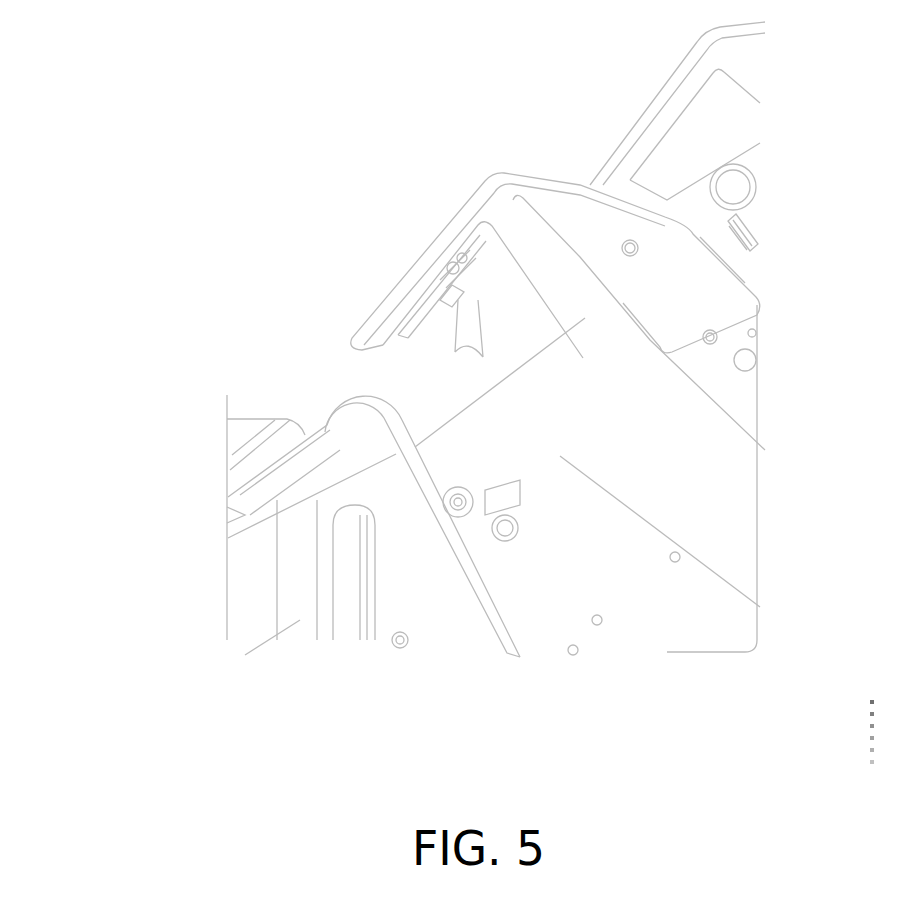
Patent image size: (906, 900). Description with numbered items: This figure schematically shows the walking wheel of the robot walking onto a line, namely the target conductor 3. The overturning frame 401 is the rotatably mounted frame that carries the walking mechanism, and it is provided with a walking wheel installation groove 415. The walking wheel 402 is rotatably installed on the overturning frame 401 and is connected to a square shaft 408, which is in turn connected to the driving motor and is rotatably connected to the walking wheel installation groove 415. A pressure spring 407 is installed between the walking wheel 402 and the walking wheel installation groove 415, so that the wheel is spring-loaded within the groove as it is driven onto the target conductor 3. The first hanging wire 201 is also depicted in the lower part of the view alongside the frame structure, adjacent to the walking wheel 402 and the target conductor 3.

The overturning frame 401 is at (480, 208).
The pressure spring 407 is at (455, 280).
The walking wheel installation groove 415 is at (490, 240).
The square shaft 408 is at (453, 297).
The walking wheel 402 is at (460, 332).
The target conductor 3 is at (302, 473).
The first hanging wire 201 is at (340, 512).